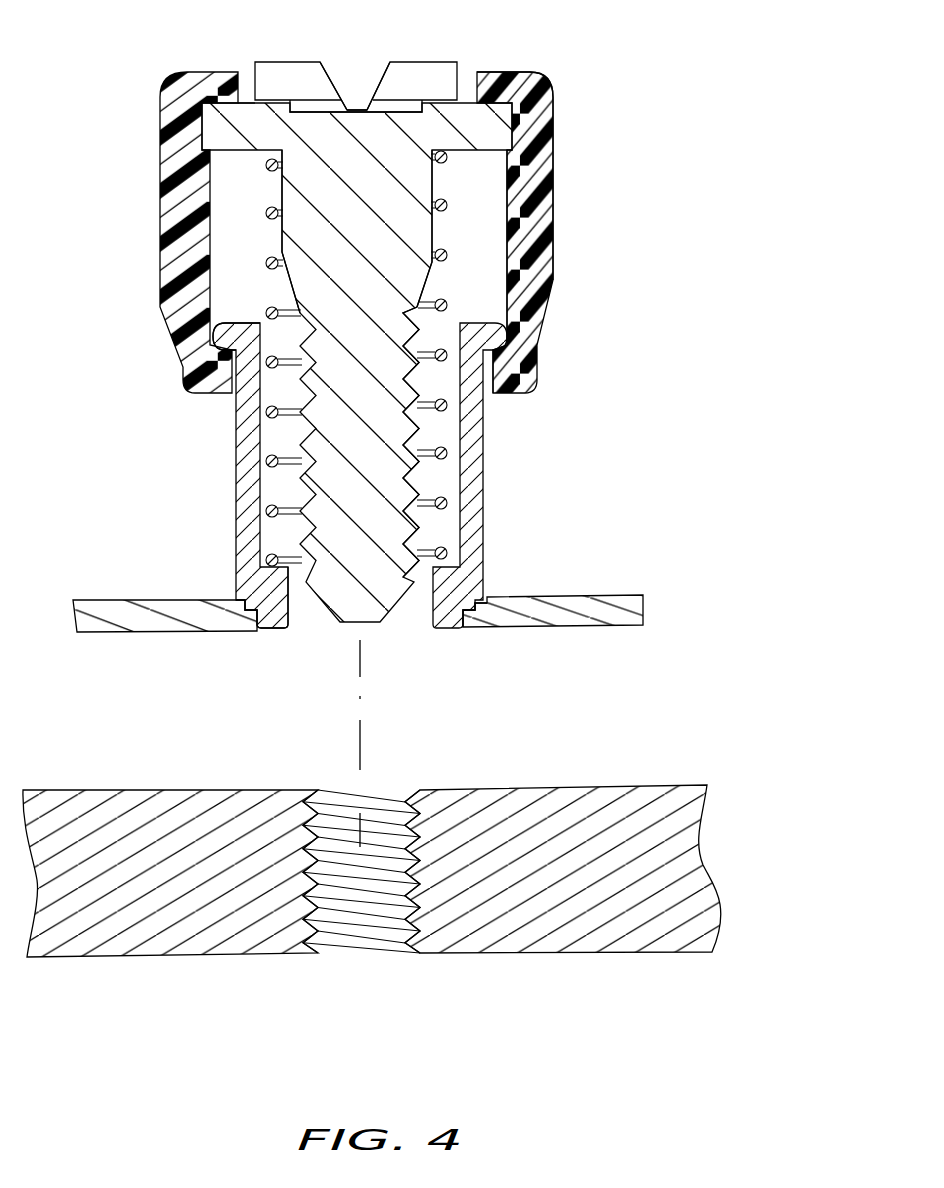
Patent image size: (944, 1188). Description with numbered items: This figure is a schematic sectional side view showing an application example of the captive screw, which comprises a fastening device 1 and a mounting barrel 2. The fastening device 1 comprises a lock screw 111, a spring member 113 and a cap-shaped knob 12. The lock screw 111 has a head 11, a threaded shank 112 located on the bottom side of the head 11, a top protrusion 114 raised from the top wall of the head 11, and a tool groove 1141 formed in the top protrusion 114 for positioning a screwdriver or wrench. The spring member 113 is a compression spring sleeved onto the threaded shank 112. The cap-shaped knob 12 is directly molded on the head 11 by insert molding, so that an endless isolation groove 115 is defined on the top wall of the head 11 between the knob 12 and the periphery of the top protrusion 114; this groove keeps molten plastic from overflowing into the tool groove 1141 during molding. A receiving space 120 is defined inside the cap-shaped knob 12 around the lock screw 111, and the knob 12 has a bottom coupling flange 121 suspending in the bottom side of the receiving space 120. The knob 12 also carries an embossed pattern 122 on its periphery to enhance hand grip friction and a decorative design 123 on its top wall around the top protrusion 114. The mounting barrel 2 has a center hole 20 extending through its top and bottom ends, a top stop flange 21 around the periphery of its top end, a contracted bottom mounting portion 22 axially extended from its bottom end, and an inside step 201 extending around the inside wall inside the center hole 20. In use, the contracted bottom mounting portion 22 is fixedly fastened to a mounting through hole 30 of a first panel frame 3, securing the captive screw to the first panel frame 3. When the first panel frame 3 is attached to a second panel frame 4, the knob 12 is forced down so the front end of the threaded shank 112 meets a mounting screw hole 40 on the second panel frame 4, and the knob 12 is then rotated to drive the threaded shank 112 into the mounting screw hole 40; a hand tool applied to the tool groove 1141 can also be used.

The fastening device 1 is at (652, 367).
The head 11 is at (497, 130).
The lock screw 111 is at (420, 190).
The threaded shank 112 is at (410, 442).
The spring member 113 is at (446, 504).
The top protrusion 114 is at (289, 63).
The tool groove 1141 is at (416, 76).
The endless isolation groove 115 is at (243, 68).
The cap-shaped knob 12 is at (568, 178).
The receiving space 120 is at (557, 205).
The bottom coupling flange 121 is at (510, 345).
The embossed pattern 122 is at (472, 247).
The decorative design 123 is at (512, 70).
The mounting barrel 2 is at (247, 480).
The center hole 20 is at (278, 440).
The inside step 201 is at (267, 556).
The top stop flange 21 is at (228, 333).
The contracted bottom mounting portion 22 is at (262, 628).
The first panel frame 3 is at (632, 598).
The mounting through hole 30 is at (480, 613).
The second panel frame 4 is at (526, 800).
The mounting screw hole 40 is at (398, 792).